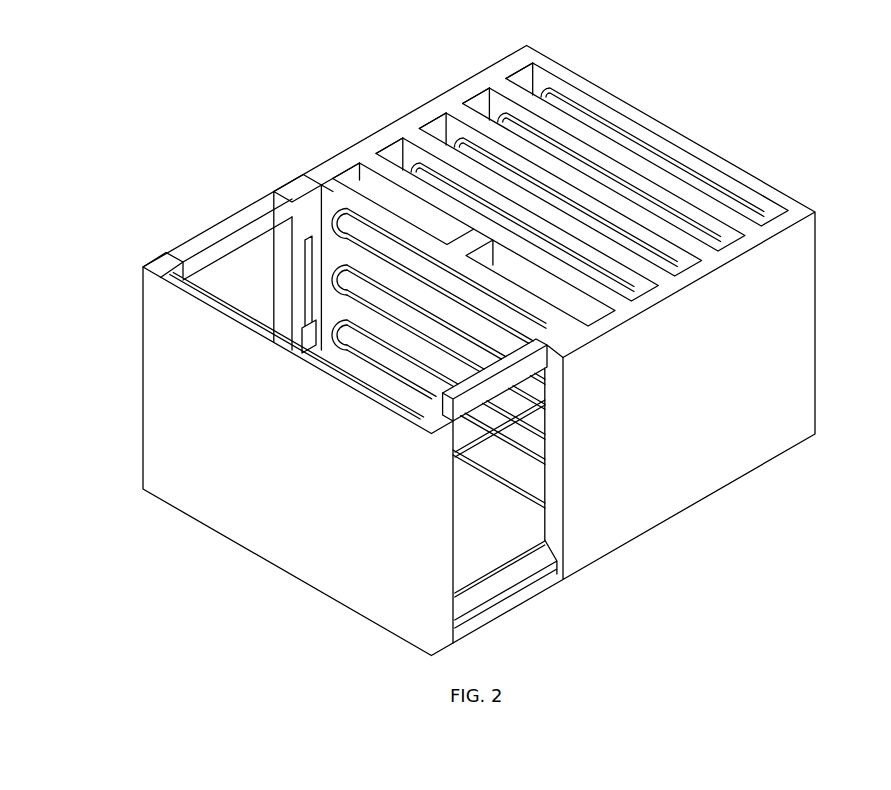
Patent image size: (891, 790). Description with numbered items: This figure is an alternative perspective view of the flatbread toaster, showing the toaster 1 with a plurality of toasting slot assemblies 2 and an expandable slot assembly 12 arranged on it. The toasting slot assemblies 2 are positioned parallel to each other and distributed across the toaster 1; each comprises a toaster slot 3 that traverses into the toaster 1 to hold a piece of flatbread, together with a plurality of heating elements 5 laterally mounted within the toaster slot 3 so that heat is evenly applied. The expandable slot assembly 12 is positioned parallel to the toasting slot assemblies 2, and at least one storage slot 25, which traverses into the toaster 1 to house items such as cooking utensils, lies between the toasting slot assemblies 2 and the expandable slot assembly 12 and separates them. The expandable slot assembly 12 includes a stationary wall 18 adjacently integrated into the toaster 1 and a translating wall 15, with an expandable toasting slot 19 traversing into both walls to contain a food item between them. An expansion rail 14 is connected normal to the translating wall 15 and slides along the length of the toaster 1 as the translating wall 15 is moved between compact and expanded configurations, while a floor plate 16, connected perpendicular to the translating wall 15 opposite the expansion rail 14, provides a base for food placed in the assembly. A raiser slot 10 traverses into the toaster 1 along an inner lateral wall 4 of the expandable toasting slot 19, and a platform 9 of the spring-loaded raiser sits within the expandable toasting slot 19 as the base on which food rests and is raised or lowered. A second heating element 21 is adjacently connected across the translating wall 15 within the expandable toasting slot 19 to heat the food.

The toaster 1 is at (838, 406).
The toasting slot assemblies 2 is at (473, 93).
The toaster slot 3 is at (530, 66).
The inner lateral wall 4 is at (312, 225).
The heating elements 5 is at (503, 118).
The platform 9 is at (518, 478).
The raiser slot 10 is at (312, 312).
The expandable slot assembly 12 is at (527, 606).
The expansion rail 14 is at (230, 266).
The translating wall 15 is at (274, 465).
The floor plate 16 is at (498, 532).
The stationary wall 18 is at (456, 349).
The expandable toasting slot 19 is at (245, 240).
The second heating element 21 is at (343, 237).
The storage slot 25 is at (361, 177).